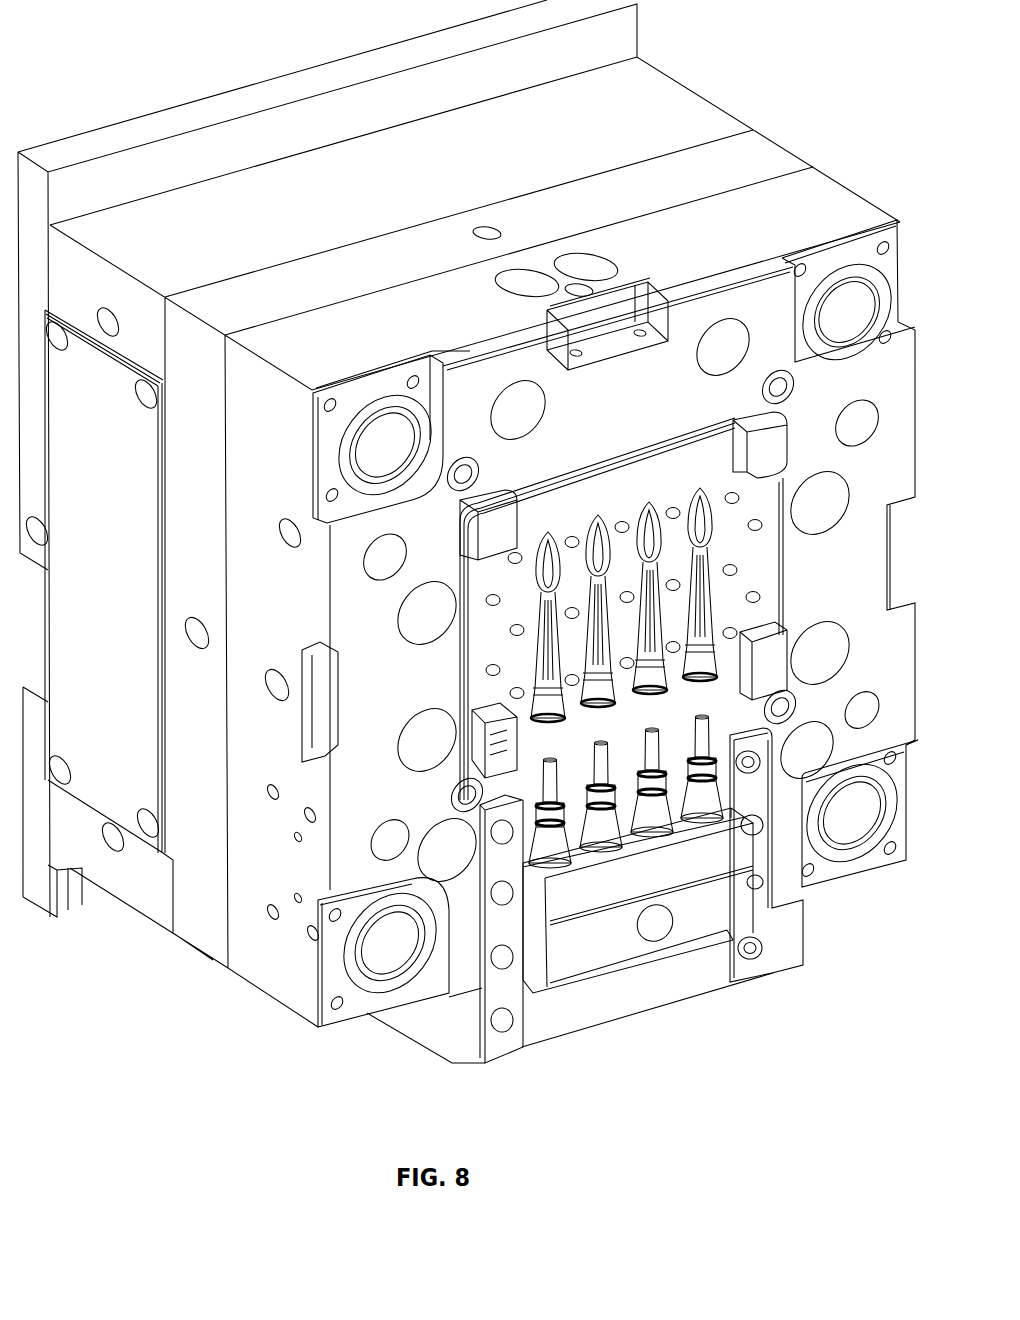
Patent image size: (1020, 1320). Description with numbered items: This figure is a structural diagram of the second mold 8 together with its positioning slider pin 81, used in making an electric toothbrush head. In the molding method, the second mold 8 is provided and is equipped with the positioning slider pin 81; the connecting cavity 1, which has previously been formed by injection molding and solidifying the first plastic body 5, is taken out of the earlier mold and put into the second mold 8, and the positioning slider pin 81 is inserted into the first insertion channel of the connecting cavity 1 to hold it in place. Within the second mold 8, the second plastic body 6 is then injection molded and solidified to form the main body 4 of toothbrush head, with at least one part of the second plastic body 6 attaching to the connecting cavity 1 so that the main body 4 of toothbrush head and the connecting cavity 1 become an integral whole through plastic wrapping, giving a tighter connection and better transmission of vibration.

The second mold 8 is at (218, 978).
The main body of toothbrush head 4 is at (703, 532).
The second plastic body 6 is at (703, 558).
The first plastic body 5 is at (550, 785).
The connecting cavity 1 is at (664, 760).
The positioning slider pin 81 is at (752, 958).